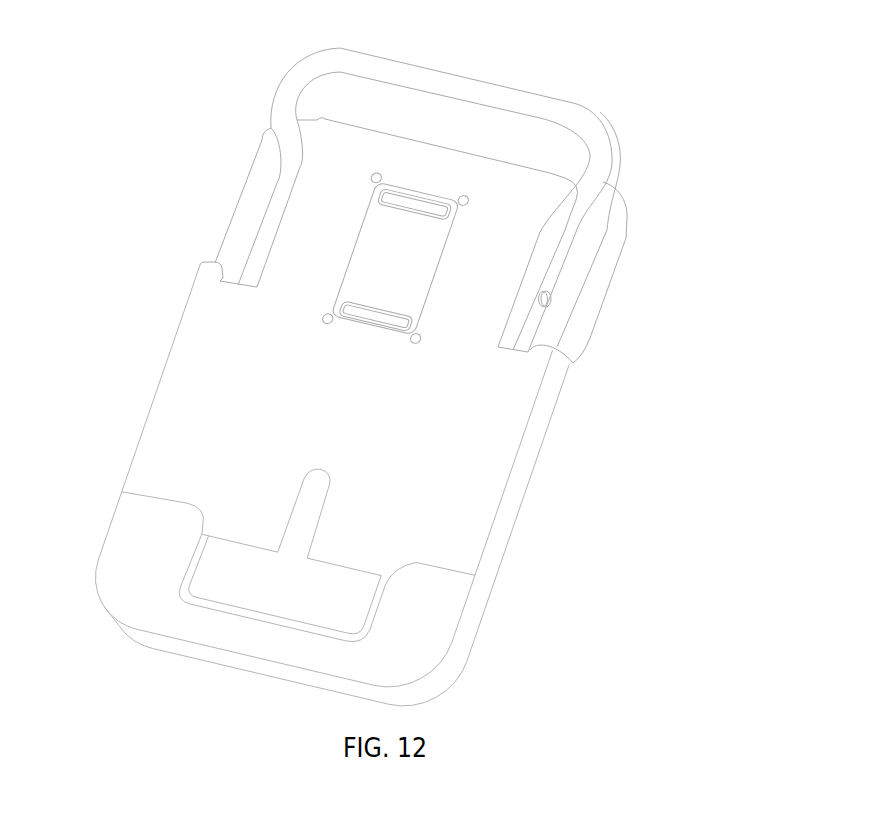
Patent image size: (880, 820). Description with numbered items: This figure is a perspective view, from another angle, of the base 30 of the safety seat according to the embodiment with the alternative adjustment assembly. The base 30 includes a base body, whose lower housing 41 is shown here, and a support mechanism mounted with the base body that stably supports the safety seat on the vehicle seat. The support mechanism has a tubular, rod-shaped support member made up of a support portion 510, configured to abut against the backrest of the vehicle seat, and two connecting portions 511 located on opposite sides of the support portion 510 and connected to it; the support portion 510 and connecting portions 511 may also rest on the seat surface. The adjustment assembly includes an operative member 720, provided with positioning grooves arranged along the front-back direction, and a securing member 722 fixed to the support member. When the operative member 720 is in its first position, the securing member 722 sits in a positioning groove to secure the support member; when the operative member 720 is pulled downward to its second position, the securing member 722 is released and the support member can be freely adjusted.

The base 30 is at (183, 91).
The lower housing 41 is at (470, 513).
The support portion 510 is at (512, 103).
The connecting portion 511 is at (538, 263).
The operative member 720 is at (395, 267).
The securing member 722 is at (545, 294).